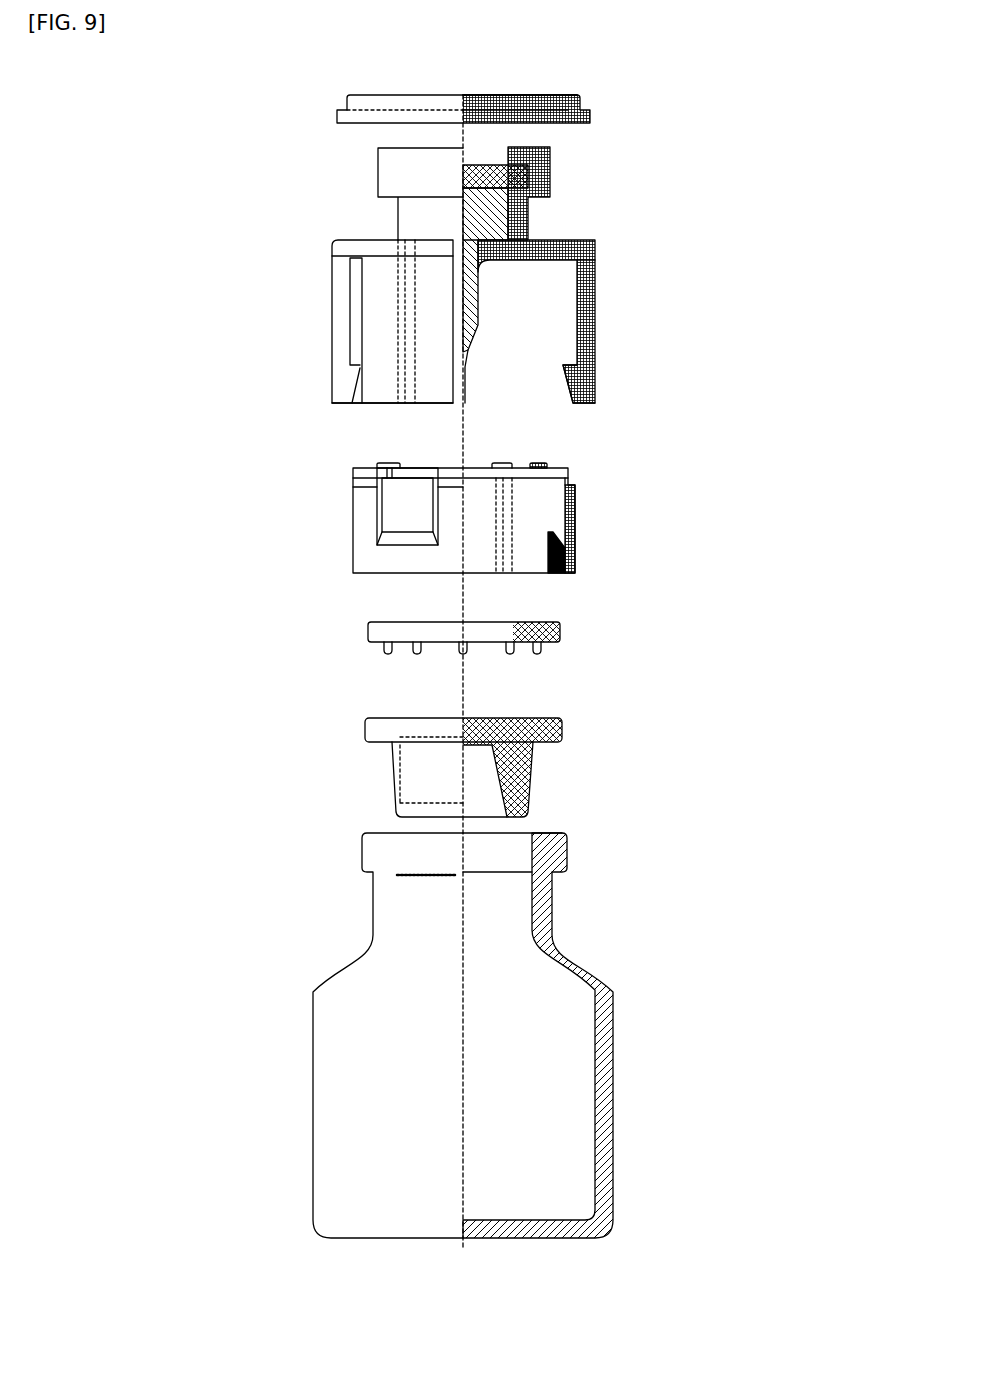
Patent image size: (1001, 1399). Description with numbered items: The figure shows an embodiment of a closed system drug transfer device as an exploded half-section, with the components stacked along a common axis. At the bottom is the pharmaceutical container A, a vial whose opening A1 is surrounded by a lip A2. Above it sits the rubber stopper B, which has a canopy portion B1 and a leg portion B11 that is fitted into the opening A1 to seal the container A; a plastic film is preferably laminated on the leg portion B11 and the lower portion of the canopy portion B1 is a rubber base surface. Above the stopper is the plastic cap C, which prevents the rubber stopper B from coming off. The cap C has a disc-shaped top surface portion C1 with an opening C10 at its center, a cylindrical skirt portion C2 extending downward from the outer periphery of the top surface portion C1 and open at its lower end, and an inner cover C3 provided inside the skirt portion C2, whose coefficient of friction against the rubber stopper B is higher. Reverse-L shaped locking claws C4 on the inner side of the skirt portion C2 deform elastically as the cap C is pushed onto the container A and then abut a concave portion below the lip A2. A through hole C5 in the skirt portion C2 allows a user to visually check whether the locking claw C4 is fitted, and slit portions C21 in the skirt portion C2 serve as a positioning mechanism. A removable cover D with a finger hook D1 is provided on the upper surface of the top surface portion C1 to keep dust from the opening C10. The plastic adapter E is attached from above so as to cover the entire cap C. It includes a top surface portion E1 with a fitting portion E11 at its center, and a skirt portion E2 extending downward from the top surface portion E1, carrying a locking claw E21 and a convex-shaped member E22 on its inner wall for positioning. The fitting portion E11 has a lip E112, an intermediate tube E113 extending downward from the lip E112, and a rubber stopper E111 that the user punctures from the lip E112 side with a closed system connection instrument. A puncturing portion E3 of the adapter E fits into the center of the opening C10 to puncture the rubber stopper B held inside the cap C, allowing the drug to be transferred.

The pharmaceutical container A is at (510, 1020).
The opening A1 is at (495, 863).
The lip A2 is at (567, 857).
The rubber stopper B is at (510, 742).
The canopy portion B1 is at (557, 720).
The leg portion B11 is at (537, 753).
The plastic cap C is at (448, 512).
The top surface portion C1 is at (540, 467).
The opening C10 is at (463, 477).
The skirt portion C2 is at (575, 507).
The slit portions C21 is at (503, 573).
The inner cover C3 is at (567, 632).
The locking claw C4 is at (575, 530).
The through hole C5 is at (398, 515).
The cover D is at (512, 95).
The finger hook D1 is at (590, 112).
The plastic adapter E is at (557, 290).
The top surface portion E1 is at (467, 160).
The fitting portion E11 is at (597, 202).
The rubber stopper E111 is at (550, 150).
The lip E112 is at (550, 170).
The intermediate tube E113 is at (530, 227).
The skirt portion E2 is at (513, 344).
The locking claw E21 is at (595, 377).
The convex-shaped member E22 is at (405, 404).
The puncturing portion E3 is at (480, 327).